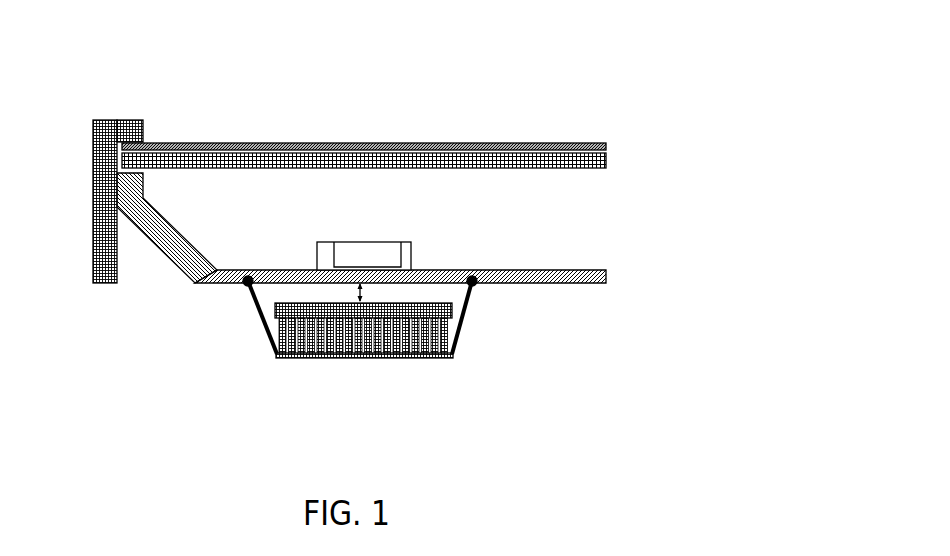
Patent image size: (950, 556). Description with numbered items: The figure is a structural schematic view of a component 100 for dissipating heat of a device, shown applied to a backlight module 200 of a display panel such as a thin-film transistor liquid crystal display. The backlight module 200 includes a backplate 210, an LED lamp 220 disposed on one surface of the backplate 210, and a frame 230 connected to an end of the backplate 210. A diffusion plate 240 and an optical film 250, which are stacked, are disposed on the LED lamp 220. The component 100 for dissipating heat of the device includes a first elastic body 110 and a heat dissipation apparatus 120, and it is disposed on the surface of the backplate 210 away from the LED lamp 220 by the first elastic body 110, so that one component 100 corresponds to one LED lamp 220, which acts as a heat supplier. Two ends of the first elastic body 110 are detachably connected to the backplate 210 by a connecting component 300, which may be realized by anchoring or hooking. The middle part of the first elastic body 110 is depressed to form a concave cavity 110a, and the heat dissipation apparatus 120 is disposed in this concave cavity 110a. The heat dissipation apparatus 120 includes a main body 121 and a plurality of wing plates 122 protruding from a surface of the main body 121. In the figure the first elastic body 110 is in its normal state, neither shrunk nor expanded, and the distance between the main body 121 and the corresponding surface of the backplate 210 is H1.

The component for dissipating heat of device 100 is at (352, 431).
The first elastic body 110 is at (297, 358).
The concave cavity 110a is at (466, 293).
The heat dissipation apparatus 120 is at (382, 403).
The main body 121 is at (363, 320).
The wing plate 122 is at (338, 348).
The backlight module 200 is at (348, 48).
The backplate 210 is at (282, 269).
The LED lamp 220 is at (372, 253).
The frame 230 is at (130, 120).
The diffusion plate 240 is at (235, 155).
The optical film 250 is at (188, 143).
The connecting component 300 is at (247, 287).
The distance between main body and backplate H1 is at (372, 293).